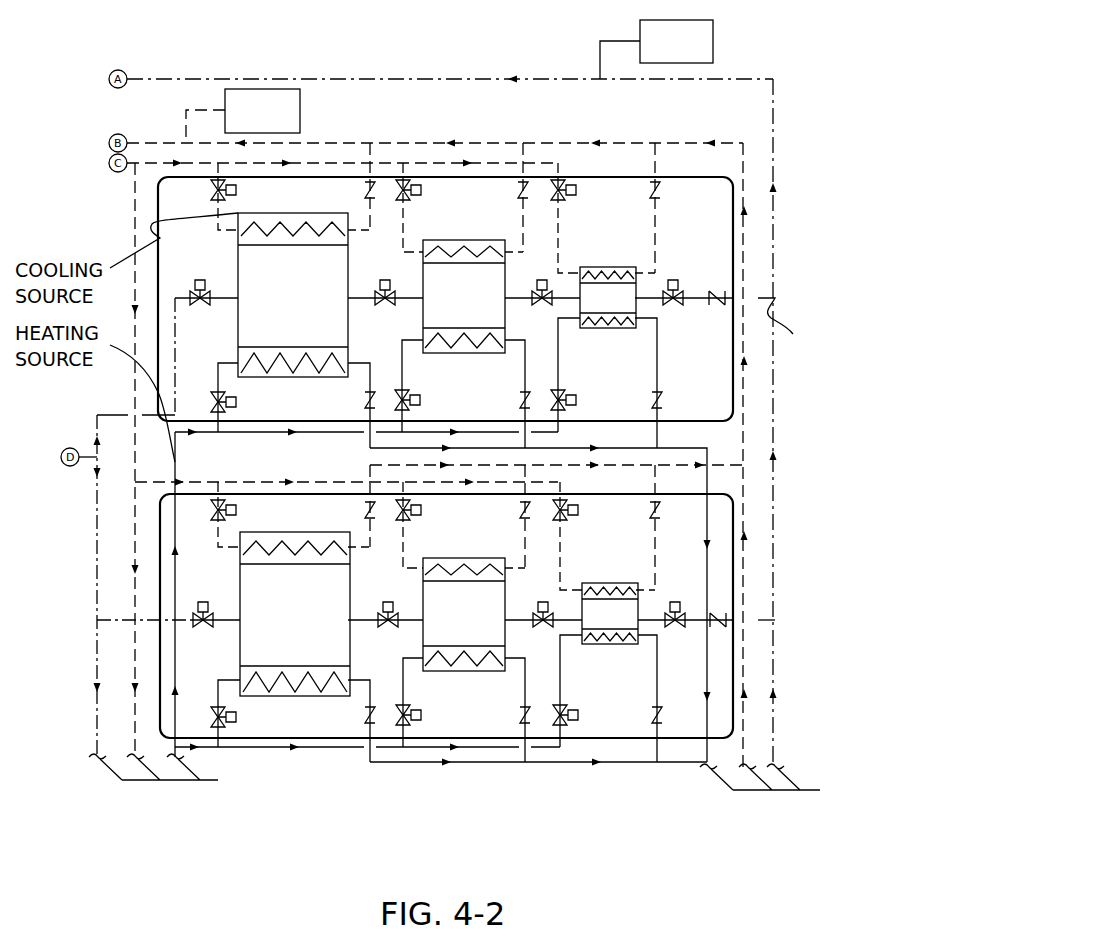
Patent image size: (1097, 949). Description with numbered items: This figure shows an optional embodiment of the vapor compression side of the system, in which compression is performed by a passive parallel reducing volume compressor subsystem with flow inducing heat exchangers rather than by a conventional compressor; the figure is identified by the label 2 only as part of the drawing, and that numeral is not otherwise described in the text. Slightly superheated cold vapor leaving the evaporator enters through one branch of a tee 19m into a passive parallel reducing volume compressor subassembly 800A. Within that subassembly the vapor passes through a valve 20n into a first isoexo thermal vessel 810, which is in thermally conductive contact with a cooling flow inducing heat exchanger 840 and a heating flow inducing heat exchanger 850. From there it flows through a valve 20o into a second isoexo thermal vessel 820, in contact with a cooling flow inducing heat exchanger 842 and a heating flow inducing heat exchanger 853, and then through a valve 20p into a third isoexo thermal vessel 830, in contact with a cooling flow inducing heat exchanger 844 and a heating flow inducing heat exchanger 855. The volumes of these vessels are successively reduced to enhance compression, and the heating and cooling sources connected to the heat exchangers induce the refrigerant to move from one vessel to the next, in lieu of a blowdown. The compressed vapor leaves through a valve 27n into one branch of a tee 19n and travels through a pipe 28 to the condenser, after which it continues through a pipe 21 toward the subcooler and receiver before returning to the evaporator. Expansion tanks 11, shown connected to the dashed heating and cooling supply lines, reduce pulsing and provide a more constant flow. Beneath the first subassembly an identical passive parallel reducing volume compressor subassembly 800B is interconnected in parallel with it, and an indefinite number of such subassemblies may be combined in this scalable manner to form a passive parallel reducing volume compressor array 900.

The substrate processing system / line 2 is at (93, 446).
The expansion tank 11 is at (713, 41).
The tee 19m is at (97, 620).
The tee 19n is at (796, 459).
The valve 20n is at (203, 280).
The valve 20o is at (383, 297).
The valve 20p is at (543, 280).
The pipe 21 is at (97, 415).
The valve 27n is at (683, 279).
The pipe 28 is at (774, 212).
The passive parallel reducing volume compressor subassembly 800A is at (732, 253).
The passive parallel reducing volume compressor subassembly 800B is at (733, 584).
The isoexo thermal vessel 810 is at (293, 295).
The isoexo thermal vessel 820 is at (464, 296).
The isoexo thermal vessel 830 is at (608, 297).
The cooling flow inducing heat exchanger 840 is at (238, 214).
The cooling flow inducing heat exchanger 842 is at (423, 243).
The cooling flow inducing heat exchanger 844 is at (600, 267).
The heating flow inducing heat exchanger 850 is at (258, 377).
The heating flow inducing heat exchanger 853 is at (428, 353).
The heating flow inducing heat exchanger 855 is at (592, 328).
The passive parallel reducing volume compressor array 900 is at (475, 779).